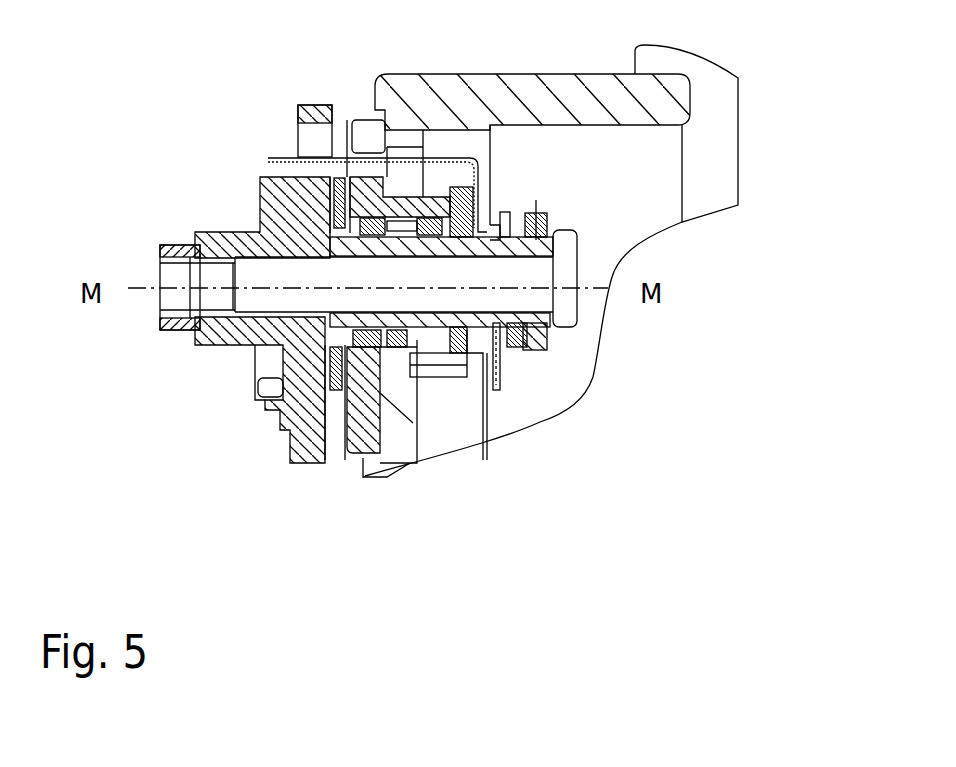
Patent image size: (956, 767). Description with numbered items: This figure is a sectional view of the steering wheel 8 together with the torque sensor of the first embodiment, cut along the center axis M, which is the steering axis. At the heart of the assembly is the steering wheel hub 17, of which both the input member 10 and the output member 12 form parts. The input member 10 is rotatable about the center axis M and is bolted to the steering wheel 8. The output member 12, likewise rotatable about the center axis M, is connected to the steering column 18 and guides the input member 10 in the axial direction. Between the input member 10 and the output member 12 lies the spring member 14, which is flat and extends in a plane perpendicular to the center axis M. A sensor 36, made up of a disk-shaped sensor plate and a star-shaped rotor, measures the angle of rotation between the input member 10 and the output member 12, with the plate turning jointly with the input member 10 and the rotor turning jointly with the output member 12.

The steering wheel 8 is at (387, 460).
The input member 10 is at (343, 437).
The output member 12 is at (287, 202).
The spring member 14 is at (342, 210).
The steering wheel hub 17 is at (548, 340).
The steering column 18 is at (173, 330).
The sensor 36 is at (497, 390).